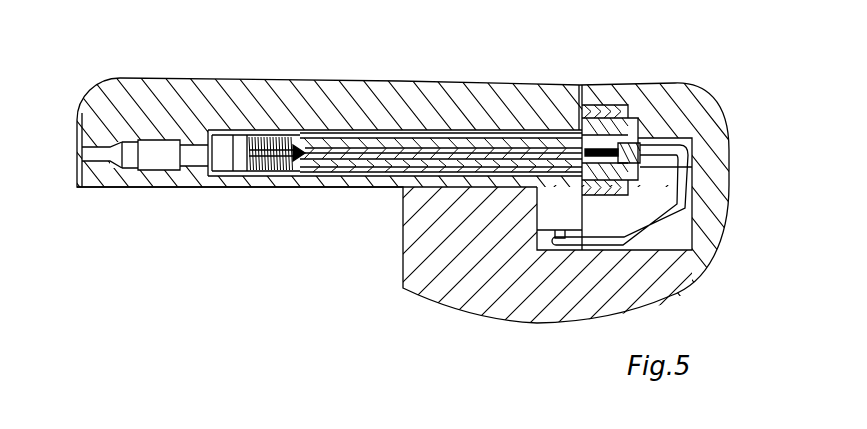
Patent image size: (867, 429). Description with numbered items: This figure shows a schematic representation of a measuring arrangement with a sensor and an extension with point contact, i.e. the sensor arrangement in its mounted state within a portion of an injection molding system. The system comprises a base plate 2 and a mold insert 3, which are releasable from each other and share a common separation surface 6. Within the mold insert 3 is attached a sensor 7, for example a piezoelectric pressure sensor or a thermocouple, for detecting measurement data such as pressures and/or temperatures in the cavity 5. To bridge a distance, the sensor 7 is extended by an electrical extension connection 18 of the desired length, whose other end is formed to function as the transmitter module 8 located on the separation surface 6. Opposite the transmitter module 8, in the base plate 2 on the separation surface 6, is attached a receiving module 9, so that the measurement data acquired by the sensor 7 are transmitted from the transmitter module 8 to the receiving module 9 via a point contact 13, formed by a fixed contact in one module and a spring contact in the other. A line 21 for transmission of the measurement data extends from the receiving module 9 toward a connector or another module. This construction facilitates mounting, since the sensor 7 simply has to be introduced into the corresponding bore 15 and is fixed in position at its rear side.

The base plate 2 is at (530, 312).
The mold insert 3 is at (137, 180).
The cavity 5 is at (82, 153).
The separation surface 6 is at (593, 87).
The sensor 7 is at (162, 153).
The transmitter module 8 is at (520, 150).
The receiving module 9 is at (640, 107).
The point contact 13 is at (300, 160).
The bore 15 is at (530, 188).
The electrical extension connection 18 is at (348, 152).
The line 21 is at (662, 218).